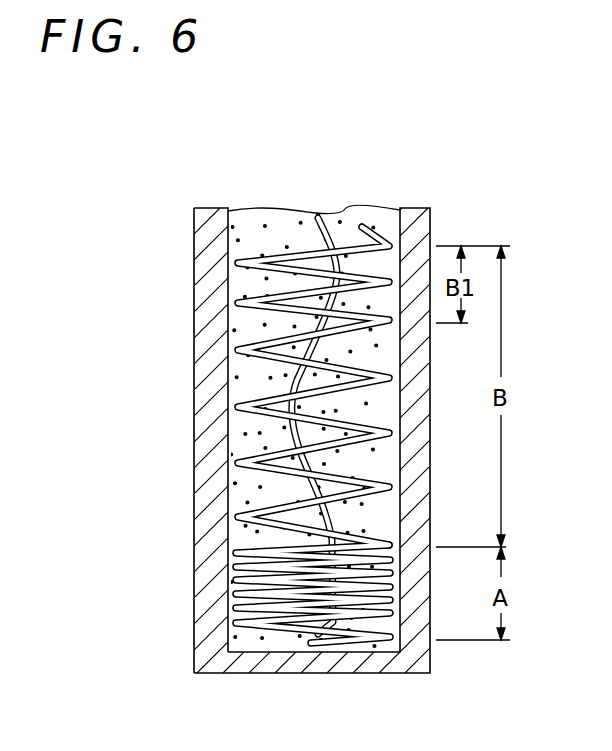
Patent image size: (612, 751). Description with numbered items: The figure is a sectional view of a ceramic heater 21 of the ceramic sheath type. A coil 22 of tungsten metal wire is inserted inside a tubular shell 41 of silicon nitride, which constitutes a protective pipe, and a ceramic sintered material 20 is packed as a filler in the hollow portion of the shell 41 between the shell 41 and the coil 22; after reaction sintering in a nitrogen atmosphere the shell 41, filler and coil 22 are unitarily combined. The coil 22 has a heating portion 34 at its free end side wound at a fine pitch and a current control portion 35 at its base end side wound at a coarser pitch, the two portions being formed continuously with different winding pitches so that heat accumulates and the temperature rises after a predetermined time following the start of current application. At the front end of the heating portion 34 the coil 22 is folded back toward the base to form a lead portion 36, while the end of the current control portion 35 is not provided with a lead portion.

The ceramic sintered material 20 is at (240, 492).
The ceramic heater 21 is at (306, 406).
The coil 22 is at (257, 392).
The heating portion 34 is at (243, 612).
The current control portion 35 is at (257, 335).
The lead portion 36 is at (332, 232).
The shell 41 is at (203, 415).